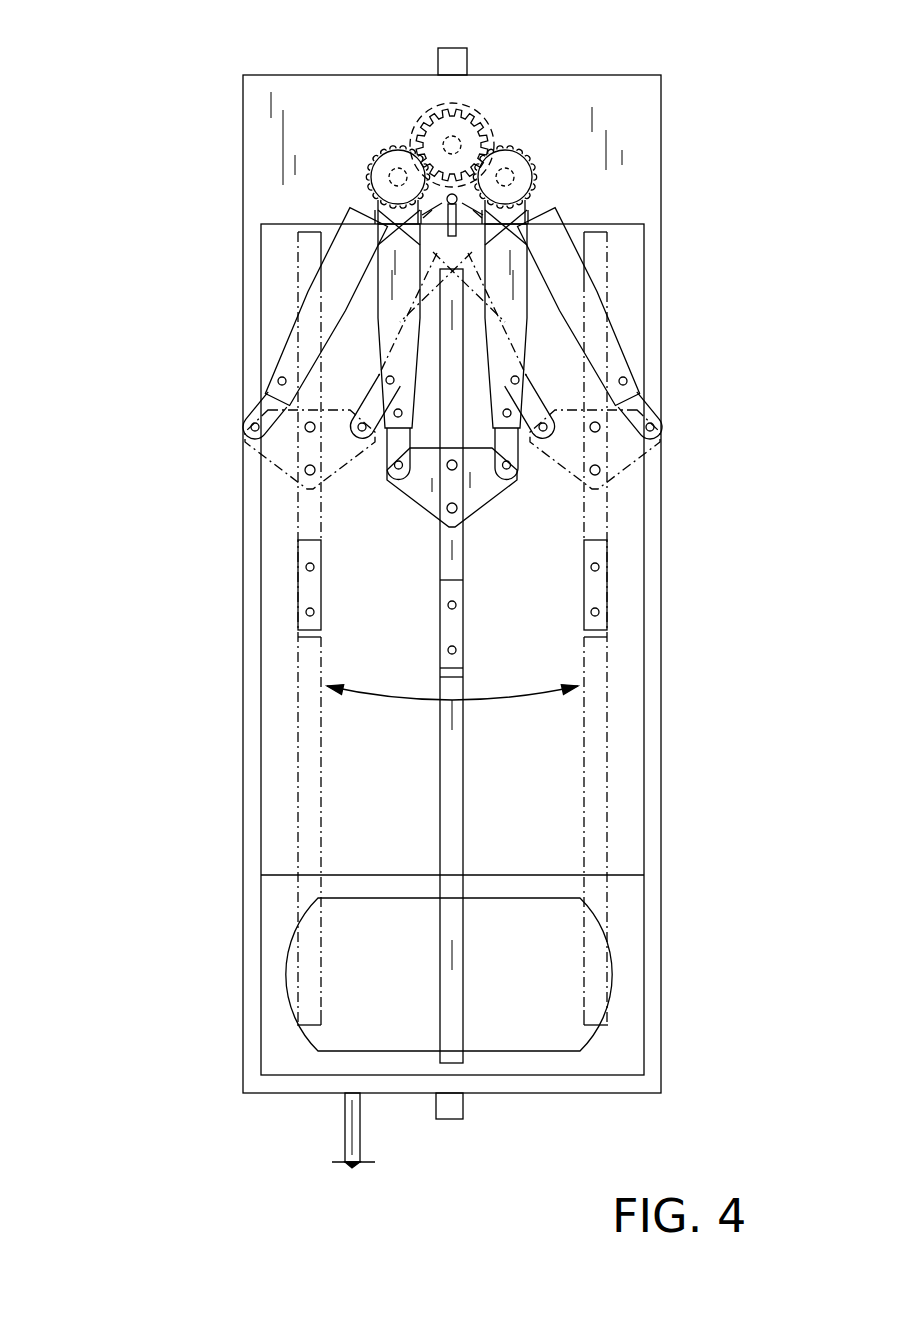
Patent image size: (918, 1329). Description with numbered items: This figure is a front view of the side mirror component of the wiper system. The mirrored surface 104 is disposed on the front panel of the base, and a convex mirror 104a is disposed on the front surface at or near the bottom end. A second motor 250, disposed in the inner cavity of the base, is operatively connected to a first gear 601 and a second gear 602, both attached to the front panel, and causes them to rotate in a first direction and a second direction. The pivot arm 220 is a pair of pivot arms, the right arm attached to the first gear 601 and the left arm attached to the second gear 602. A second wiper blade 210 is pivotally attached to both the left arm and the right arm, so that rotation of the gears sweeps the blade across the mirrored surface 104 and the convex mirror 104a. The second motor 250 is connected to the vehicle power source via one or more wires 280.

The second motor 250 is at (420, 112).
The first gear 601 is at (518, 150).
The second gear 602 is at (392, 160).
The pivot arm 220 is at (402, 243).
The mirrored surface 104 is at (383, 566).
The second wiper blade 210 is at (455, 843).
The convex mirror 104a is at (528, 958).
The wires 280 is at (347, 1128).